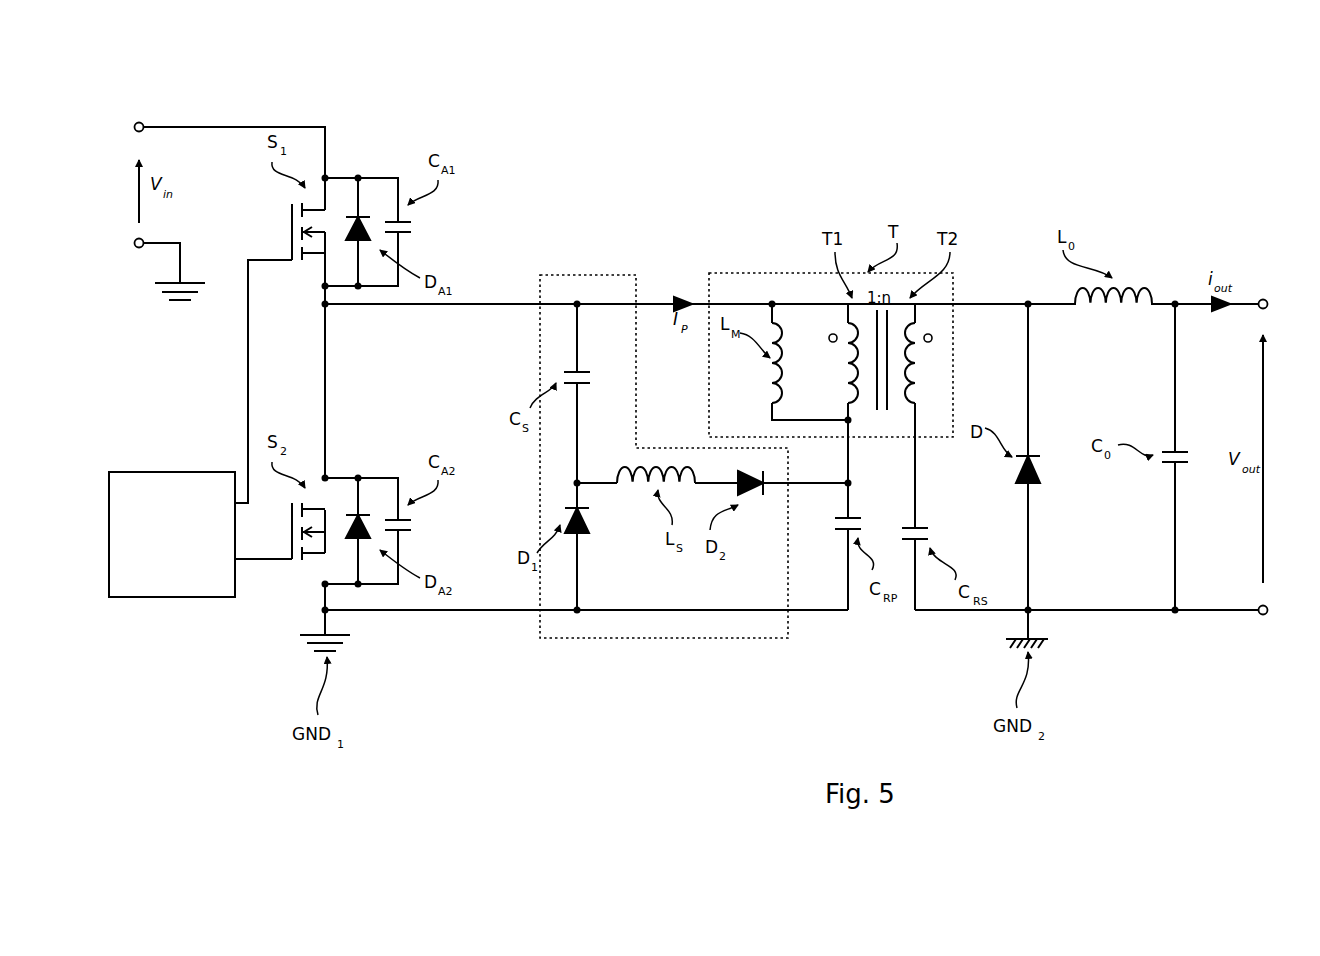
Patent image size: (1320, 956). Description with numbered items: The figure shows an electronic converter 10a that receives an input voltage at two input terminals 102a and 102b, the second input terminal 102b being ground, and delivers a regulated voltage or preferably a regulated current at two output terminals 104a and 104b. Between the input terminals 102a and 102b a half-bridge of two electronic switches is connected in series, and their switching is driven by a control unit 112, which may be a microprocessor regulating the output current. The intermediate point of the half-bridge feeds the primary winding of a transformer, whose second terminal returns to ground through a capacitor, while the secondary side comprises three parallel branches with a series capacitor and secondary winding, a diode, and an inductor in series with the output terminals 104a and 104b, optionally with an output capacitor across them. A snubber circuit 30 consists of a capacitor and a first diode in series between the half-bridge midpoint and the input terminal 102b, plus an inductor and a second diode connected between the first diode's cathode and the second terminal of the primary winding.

The input terminal 102a is at (150, 115).
The input terminal 102b is at (136, 252).
The control unit 112 is at (182, 592).
The electronic converter 10a is at (928, 140).
The snubber circuit 30 is at (582, 272).
The output terminal 104a is at (1270, 278).
The output terminal 104b is at (1263, 620).